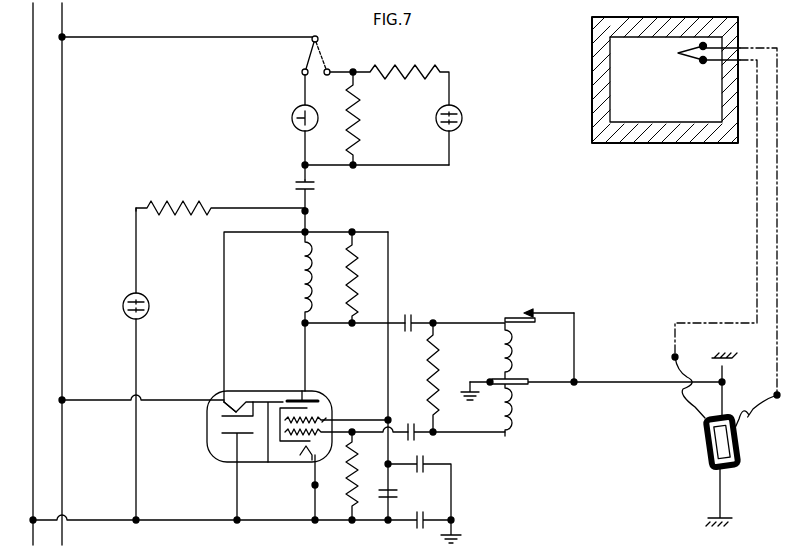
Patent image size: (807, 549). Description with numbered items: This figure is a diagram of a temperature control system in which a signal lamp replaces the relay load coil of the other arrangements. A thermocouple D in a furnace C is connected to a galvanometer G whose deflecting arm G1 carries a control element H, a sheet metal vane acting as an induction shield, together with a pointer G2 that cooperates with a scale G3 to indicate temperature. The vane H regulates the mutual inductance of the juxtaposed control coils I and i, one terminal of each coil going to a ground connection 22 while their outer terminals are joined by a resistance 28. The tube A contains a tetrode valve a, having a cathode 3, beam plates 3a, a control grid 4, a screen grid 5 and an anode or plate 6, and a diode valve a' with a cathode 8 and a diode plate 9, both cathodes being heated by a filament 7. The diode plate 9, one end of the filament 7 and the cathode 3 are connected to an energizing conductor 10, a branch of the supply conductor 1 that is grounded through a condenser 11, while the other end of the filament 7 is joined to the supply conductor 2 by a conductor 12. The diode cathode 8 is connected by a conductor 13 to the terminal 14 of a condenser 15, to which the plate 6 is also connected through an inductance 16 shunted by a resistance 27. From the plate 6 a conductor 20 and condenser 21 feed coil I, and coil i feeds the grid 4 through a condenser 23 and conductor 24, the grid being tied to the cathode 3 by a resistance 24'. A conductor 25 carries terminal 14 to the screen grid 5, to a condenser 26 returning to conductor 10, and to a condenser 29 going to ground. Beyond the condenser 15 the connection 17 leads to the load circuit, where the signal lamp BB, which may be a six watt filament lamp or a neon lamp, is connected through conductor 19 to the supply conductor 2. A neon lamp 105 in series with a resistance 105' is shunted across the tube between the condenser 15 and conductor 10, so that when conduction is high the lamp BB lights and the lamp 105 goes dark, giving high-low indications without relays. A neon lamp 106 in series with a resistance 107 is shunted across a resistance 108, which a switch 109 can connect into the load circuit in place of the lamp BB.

The supply conductor 1 is at (33, 113).
The supply conductor 2 is at (64, 113).
The conductor 19 is at (211, 37).
The switch 109 is at (310, 57).
The resistance 107 is at (405, 62).
The resistance 108 is at (365, 117).
The neon lamp 106 is at (464, 118).
The signal lamp BB is at (291, 119).
The conductor 17 is at (295, 182).
The condenser 15 is at (315, 186).
The condenser terminal 14 is at (309, 215).
The resistance 105' is at (220, 199).
The neon lamp 105 is at (118, 365).
The conductor 13 is at (224, 278).
The inductance 16 is at (305, 278).
The resistance 27 is at (357, 271).
The conductor 25 is at (388, 255).
The condenser 21 is at (406, 317).
The conductor 20 is at (338, 325).
The conductor 12 is at (88, 400).
The tube A is at (284, 391).
The cathode of the diode valve 8 is at (217, 416).
The diode valve a' is at (206, 427).
The diode plate 9 is at (225, 442).
The filament 7 is at (268, 462).
The cathode 3 is at (309, 441).
The control grid 4 is at (315, 452).
The anode or plate 6 is at (307, 394).
The beam plates 3a is at (322, 408).
The screen grid 5 is at (325, 418).
The tetrode valve a is at (337, 412).
The resistance 24' is at (364, 477).
The condenser 26 is at (388, 499).
The resistance 28 is at (432, 365).
The condenser 23 is at (416, 442).
The condenser 29 is at (419, 471).
The energizing conductor 10 is at (292, 520).
The condenser 11 is at (420, 532).
The inductance or control coil I is at (505, 344).
The second inductance or control coil i is at (506, 401).
The control element H is at (521, 384).
The ground connection 22 is at (476, 378).
The scale G3 is at (515, 313).
The pointer G2 is at (570, 313).
The deflecting arm G1 is at (618, 383).
The furnace C is at (592, 49).
The thermocouple D is at (680, 53).
The galvanometer G is at (704, 428).
The conductor 24 is at (493, 446).